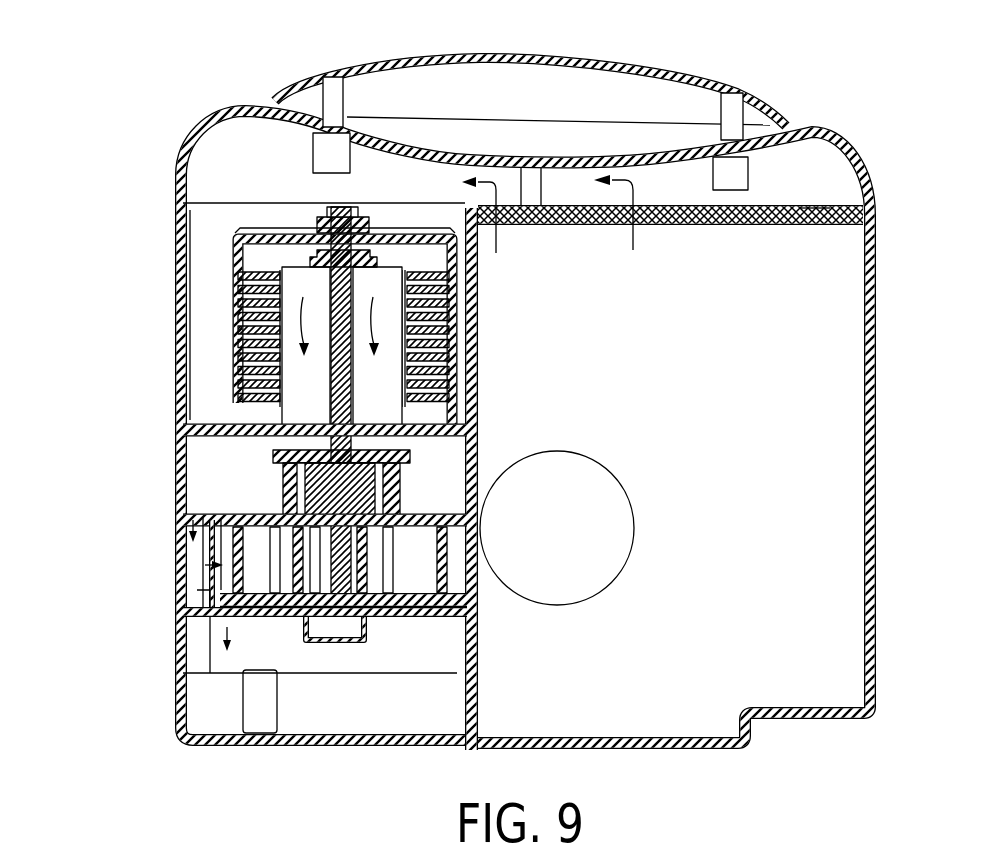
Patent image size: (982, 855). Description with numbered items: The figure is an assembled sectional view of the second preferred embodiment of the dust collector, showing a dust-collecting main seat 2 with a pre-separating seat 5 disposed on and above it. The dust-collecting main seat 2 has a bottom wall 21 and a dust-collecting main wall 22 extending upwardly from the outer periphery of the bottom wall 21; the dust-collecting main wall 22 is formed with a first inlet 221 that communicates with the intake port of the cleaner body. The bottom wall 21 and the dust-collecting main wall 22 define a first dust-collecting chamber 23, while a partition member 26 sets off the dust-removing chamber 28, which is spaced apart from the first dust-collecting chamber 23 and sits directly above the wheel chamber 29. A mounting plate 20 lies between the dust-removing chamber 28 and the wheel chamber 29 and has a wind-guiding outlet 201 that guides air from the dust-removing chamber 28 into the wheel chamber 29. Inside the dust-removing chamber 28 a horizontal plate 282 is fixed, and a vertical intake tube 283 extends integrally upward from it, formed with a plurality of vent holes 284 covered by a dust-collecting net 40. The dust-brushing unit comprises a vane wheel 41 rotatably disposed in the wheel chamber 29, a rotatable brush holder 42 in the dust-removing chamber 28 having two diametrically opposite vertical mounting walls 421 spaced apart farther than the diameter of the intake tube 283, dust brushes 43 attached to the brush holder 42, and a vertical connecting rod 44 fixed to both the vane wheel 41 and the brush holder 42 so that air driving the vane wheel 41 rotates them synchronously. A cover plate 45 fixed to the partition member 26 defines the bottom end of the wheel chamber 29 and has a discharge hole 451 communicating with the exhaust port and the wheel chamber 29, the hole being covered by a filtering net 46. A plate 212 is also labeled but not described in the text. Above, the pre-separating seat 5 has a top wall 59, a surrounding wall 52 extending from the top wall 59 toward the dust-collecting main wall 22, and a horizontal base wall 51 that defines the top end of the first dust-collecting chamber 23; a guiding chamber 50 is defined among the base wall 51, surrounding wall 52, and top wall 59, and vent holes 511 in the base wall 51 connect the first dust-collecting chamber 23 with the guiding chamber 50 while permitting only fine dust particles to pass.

The dust-collecting main seat 2 is at (900, 445).
The pre-separating seat 5 is at (680, 45).
The mounting plate 20 is at (230, 552).
The bottom wall 21 is at (705, 750).
The dust-collecting main wall 22 is at (868, 340).
The first inlet 221 is at (623, 538).
The first dust-collecting chamber 23 is at (810, 284).
The partition member 26 is at (478, 600).
The dust-removing chamber 28 is at (208, 373).
The horizontal plate 282 is at (233, 432).
The vertical intake tube 283 is at (217, 232).
The vent holes 284 is at (235, 283).
The wheel chamber 29 is at (212, 552).
The wind-guiding outlet 201 is at (213, 567).
The partition plate 212 is at (217, 427).
The dust-collecting net 40 is at (231, 265).
The vane wheel 41 is at (225, 610).
The rotatable brush holder 42 is at (247, 333).
The vertical mounting walls 421 is at (235, 320).
The dust brushes 43 is at (413, 268).
The vertical connecting rod 44 is at (338, 297).
The cover plate 45 is at (396, 617).
The discharge hole 451 is at (252, 617).
The filtering net 46 is at (248, 670).
The guiding chamber 50 is at (778, 174).
The horizontal base wall 51 is at (880, 238).
The vent holes 511 is at (818, 207).
The surrounding wall 52 is at (177, 152).
The top wall 59 is at (757, 141).